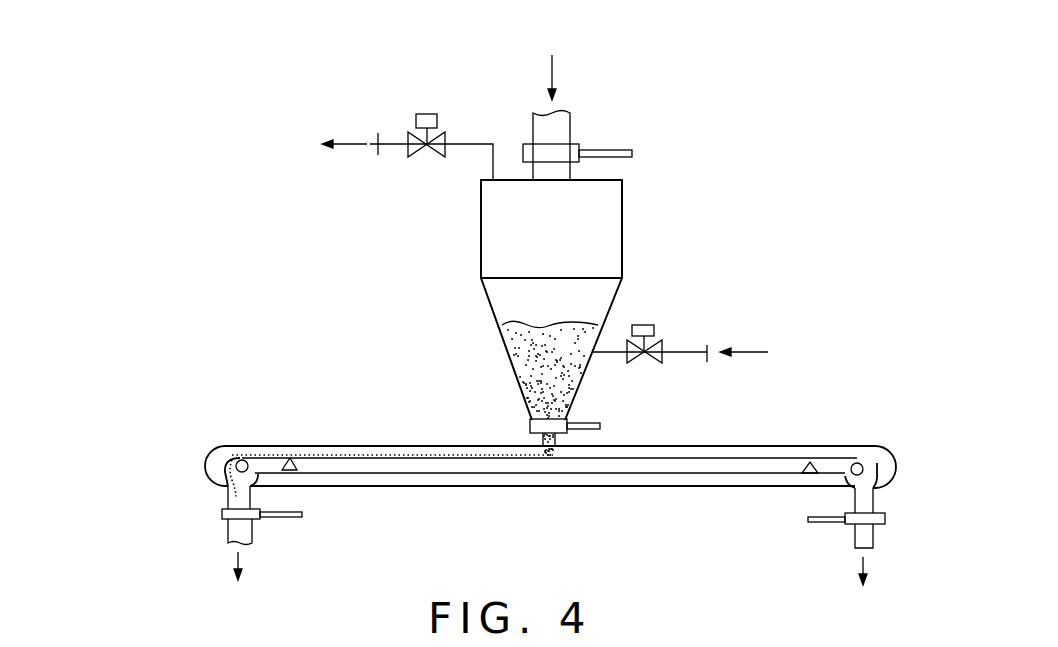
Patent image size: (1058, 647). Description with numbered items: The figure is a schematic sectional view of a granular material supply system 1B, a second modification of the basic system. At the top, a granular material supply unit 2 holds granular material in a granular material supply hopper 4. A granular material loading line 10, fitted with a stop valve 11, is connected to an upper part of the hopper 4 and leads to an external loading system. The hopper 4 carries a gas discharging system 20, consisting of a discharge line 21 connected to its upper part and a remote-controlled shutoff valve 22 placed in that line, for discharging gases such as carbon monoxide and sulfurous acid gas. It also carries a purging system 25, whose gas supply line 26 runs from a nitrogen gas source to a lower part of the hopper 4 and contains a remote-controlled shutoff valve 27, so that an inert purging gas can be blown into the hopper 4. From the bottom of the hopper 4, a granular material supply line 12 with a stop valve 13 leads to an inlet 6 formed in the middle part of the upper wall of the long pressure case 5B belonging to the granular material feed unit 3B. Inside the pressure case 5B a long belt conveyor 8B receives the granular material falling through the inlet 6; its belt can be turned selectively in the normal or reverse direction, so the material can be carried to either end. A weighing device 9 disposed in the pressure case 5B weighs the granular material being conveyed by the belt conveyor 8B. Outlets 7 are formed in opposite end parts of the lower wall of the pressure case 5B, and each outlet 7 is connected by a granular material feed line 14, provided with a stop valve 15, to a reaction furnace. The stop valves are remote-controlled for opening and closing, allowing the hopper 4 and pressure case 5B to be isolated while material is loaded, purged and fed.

The granular material supply system 1B is at (410, 55).
The granular material supply unit 2 is at (447, 270).
The granular material supply hopper 4 is at (623, 233).
The granular material loading line 10 is at (570, 129).
The stop valve 11 is at (523, 150).
The gas discharging system 20 is at (404, 103).
The discharge line 21 is at (393, 146).
The remote-controlled shutoff valve 22 is at (430, 150).
The purging system 25 is at (676, 308).
The gas supply line 26 is at (685, 353).
The remote-controlled shutoff valve 27 is at (642, 362).
The stop valve 13 is at (530, 422).
The granular material supply line 12 is at (542, 440).
The inlet 6 is at (545, 448).
The granular material feed unit 3B is at (183, 448).
The pressure case 5B is at (217, 436).
The belt conveyor 8B is at (652, 488).
The weighing device 9 is at (292, 446).
The outlet 7 is at (250, 490).
The granular material feed line 14 is at (235, 505).
The stop valve 15 is at (222, 516).